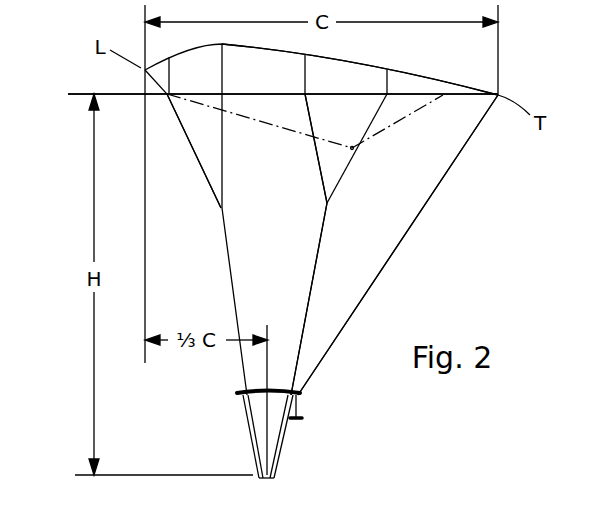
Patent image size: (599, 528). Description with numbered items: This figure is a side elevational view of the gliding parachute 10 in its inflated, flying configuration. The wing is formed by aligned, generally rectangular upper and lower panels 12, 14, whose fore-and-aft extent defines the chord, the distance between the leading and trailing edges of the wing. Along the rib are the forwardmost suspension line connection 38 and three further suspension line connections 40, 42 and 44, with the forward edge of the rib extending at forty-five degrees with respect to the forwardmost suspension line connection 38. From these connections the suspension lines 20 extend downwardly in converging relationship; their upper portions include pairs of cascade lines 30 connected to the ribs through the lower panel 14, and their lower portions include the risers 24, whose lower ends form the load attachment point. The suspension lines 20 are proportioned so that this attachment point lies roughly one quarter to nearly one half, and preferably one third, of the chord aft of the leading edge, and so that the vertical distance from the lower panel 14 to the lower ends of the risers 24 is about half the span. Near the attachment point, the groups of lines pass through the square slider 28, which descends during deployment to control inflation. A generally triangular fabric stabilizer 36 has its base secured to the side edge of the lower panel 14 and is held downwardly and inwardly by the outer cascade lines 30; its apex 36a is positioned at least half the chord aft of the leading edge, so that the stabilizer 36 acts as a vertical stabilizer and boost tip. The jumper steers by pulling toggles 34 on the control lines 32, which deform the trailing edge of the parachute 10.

The gliding parachute 10 is at (131, 74).
The upper panel 12 is at (370, 66).
The lower panel 14 is at (355, 96).
The suspension lines 20 is at (396, 270).
The risers 24 is at (250, 428).
The slider 28 is at (258, 391).
The cascade lines 30 is at (195, 158).
The control lines 32 is at (450, 170).
The toggles 34 is at (303, 419).
The fabric stabilizers 36 is at (290, 138).
The apex 36a is at (352, 148).
The forwardmost suspension line connection 38 is at (171, 80).
The suspension line connection 40 is at (224, 78).
The suspension line connection 42 is at (307, 82).
The suspension line connection 44 is at (390, 82).